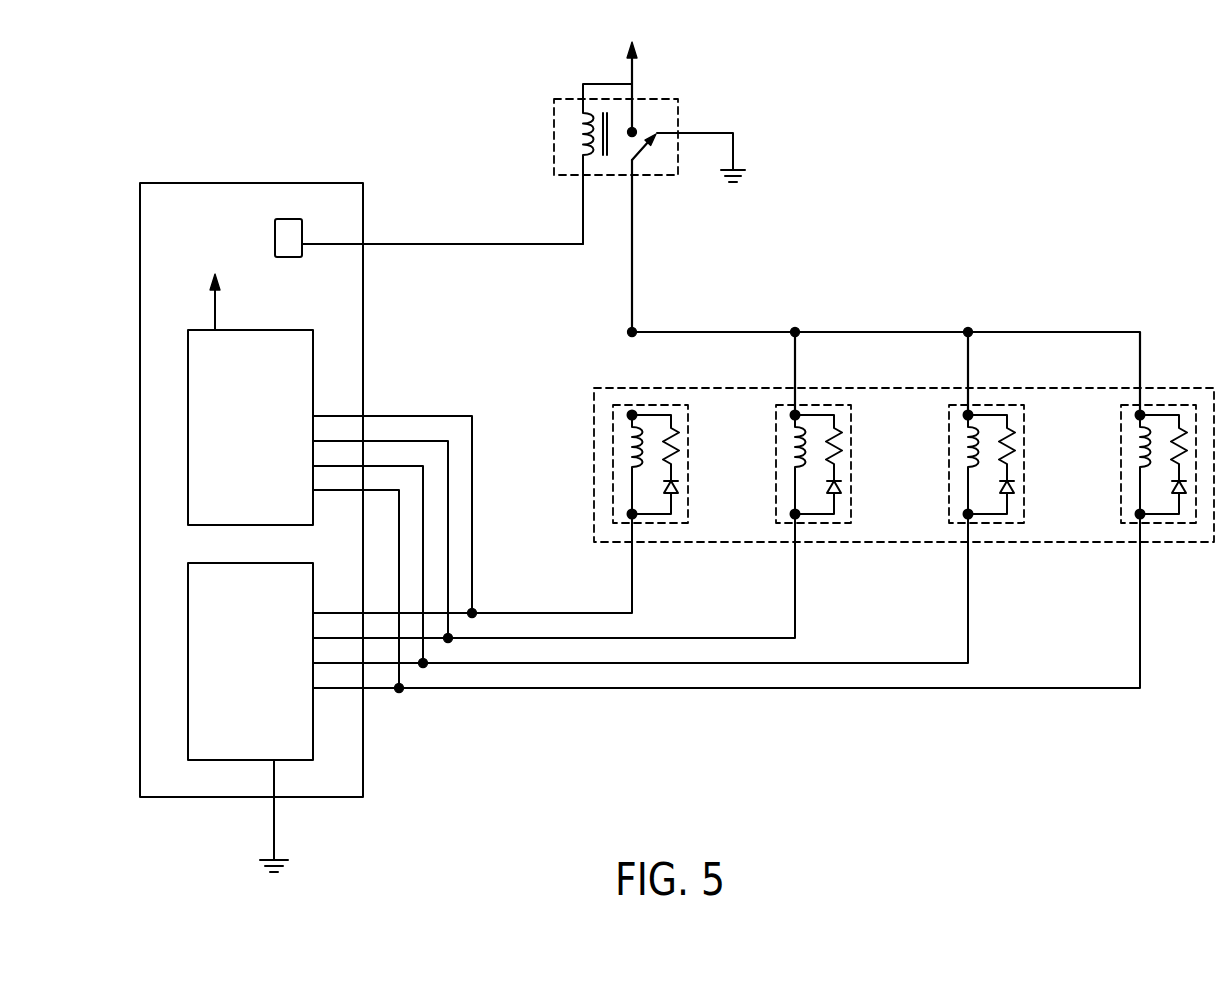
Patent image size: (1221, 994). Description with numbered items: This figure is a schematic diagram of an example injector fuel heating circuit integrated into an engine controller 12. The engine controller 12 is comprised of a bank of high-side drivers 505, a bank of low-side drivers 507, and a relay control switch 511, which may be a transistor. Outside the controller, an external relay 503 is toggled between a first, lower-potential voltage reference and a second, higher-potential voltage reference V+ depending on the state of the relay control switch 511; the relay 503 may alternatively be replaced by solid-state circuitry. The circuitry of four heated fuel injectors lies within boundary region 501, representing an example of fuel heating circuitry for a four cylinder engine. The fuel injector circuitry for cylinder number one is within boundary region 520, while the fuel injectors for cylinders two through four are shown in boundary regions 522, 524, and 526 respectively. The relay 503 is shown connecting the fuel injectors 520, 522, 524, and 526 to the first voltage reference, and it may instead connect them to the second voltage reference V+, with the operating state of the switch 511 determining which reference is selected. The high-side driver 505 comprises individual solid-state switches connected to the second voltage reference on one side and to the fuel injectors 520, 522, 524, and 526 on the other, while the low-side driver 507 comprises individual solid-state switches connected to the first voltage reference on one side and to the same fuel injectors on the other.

The engine controller 12 is at (140, 797).
The boundary region 501 is at (1172, 542).
The external relay 503 is at (670, 98).
The high-side drivers 505 is at (267, 442).
The low-side drivers 507 is at (267, 670).
The relay control switch 511 is at (288, 258).
The boundary region 520 is at (689, 482).
The boundary region 522 is at (852, 482).
The boundary region 524 is at (1025, 482).
The boundary region 526 is at (1118, 425).